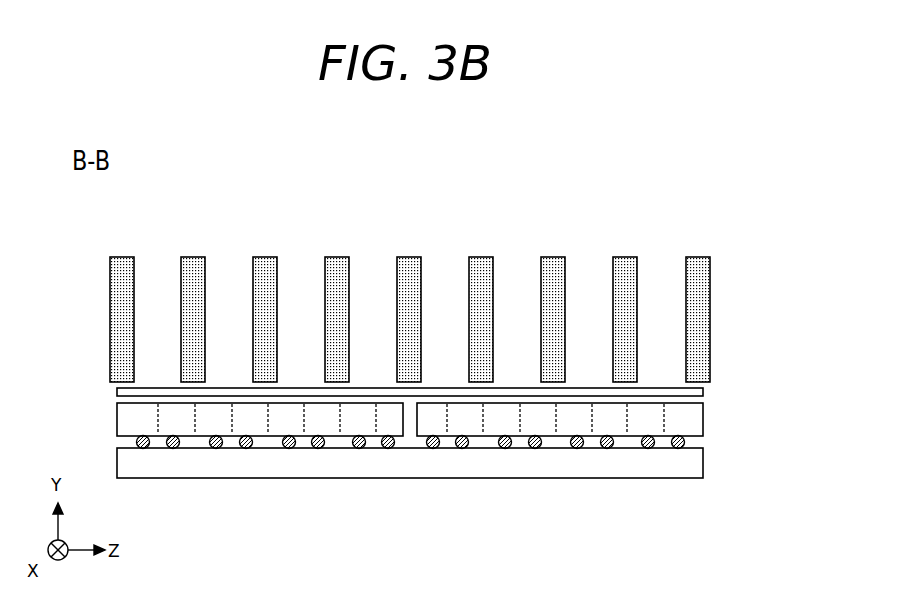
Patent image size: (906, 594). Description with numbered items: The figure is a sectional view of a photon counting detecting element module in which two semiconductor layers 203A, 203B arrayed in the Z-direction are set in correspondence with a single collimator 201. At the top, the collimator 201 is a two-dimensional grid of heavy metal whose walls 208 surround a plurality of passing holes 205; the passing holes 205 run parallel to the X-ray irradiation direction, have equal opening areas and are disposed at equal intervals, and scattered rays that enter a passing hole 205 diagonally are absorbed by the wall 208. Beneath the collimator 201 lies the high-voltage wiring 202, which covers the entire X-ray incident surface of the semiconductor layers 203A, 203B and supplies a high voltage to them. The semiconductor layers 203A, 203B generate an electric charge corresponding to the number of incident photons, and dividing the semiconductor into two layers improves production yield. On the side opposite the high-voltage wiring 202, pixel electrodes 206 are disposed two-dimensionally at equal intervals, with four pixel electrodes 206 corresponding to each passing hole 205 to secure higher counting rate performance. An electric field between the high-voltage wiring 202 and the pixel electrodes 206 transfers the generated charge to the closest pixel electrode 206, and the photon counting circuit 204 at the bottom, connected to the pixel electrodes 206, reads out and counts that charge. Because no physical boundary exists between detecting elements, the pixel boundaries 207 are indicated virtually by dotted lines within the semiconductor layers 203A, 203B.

The collimator 201 is at (765, 178).
The high-voltage wiring 202 is at (455, 375).
The semiconductor layer 203A is at (120, 422).
The semiconductor layer 203B is at (616, 472).
The photon counting circuit 204 is at (455, 451).
The passing hole 205 is at (658, 283).
The pixel electrode 206 is at (419, 495).
The pixel boundary 207 is at (581, 480).
The wall 208 is at (721, 283).